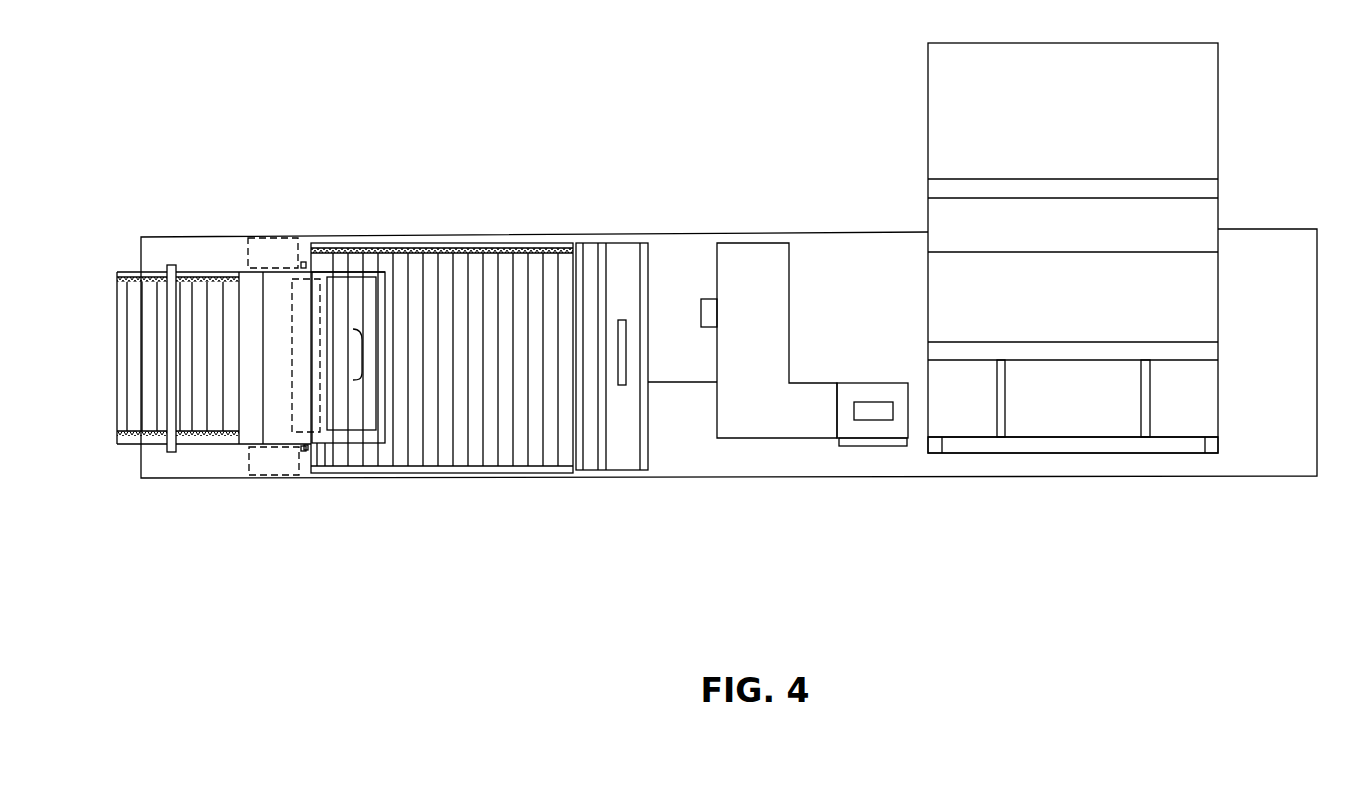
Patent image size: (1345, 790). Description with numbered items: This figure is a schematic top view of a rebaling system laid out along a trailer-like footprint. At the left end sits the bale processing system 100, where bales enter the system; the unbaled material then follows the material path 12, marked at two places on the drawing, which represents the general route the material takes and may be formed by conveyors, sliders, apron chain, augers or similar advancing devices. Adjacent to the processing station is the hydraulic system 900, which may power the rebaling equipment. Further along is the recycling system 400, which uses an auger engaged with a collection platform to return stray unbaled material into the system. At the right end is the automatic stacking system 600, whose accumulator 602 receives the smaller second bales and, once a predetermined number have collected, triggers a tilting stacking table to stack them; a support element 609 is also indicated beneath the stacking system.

The material path 12 is at (188, 374).
The bale processing system 100 is at (277, 226).
The hydraulic system 900 is at (470, 191).
The recycling system 400 is at (673, 241).
The automatic stacking system 600 is at (1125, 315).
The accumulator 602 is at (1049, 417).
The base plate 609 is at (1130, 445).